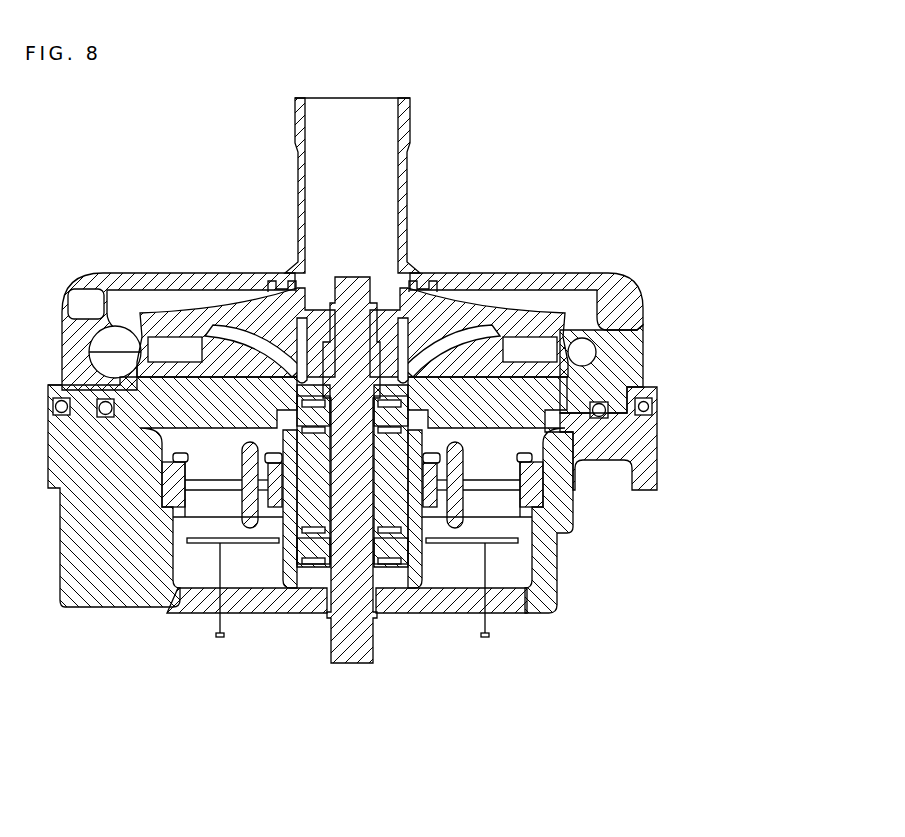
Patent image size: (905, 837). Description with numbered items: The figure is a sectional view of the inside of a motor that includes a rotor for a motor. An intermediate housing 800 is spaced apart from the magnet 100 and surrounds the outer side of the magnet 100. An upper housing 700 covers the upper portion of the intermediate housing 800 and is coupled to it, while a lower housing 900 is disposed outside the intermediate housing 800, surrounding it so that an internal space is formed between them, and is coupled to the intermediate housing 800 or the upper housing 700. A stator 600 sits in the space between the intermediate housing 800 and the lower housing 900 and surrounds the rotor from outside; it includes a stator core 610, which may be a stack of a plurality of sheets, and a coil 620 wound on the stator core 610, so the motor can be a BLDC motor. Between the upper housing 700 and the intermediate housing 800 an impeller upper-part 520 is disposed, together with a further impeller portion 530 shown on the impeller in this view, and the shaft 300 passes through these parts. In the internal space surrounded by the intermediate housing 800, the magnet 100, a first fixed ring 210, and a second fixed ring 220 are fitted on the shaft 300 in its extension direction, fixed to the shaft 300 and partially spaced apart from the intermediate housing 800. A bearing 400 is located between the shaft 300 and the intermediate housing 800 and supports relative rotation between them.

The magnet 100 is at (430, 513).
The first fixed ring 210 is at (260, 447).
The second fixed ring 220 is at (285, 455).
The shaft 300 is at (352, 663).
The bearing 400 is at (313, 560).
The impeller upper-part 520 is at (525, 328).
The impeller shroud 530 is at (433, 353).
The stator 600 is at (670, 596).
The stator core 610 is at (465, 505).
The coil 620 is at (500, 512).
The upper housing 700 is at (637, 303).
The intermediate housing 800 is at (613, 370).
The lower housing 900 is at (647, 463).